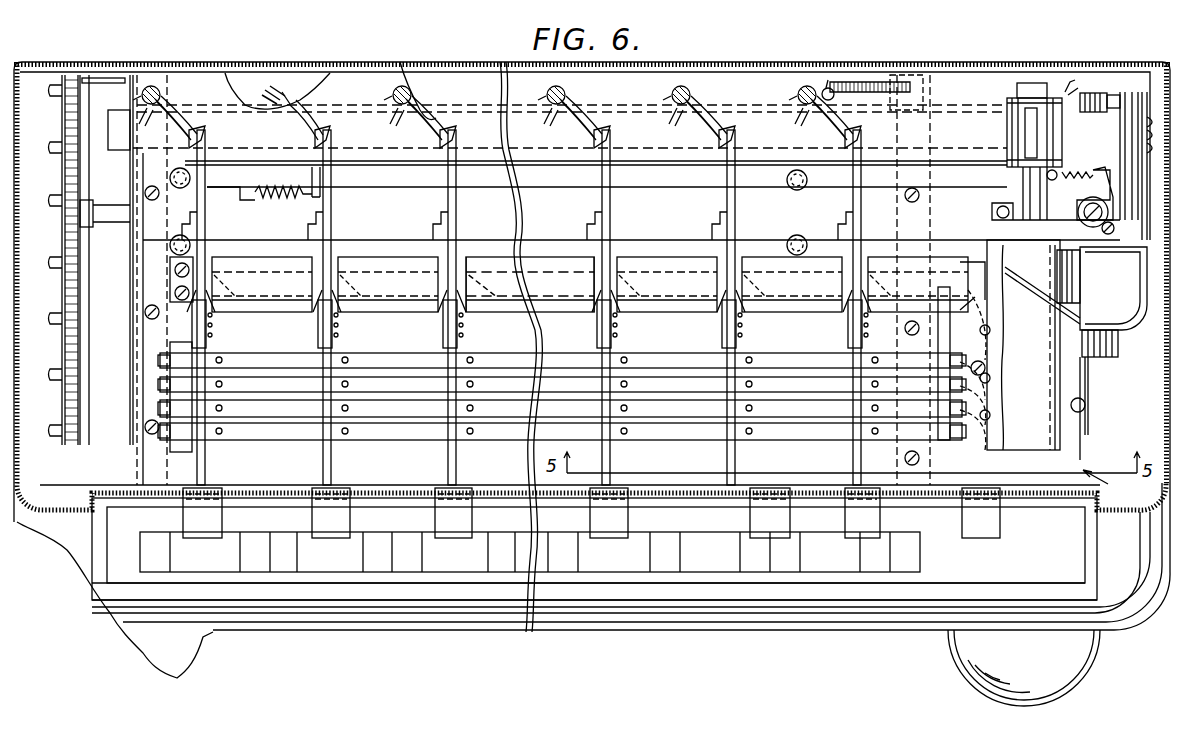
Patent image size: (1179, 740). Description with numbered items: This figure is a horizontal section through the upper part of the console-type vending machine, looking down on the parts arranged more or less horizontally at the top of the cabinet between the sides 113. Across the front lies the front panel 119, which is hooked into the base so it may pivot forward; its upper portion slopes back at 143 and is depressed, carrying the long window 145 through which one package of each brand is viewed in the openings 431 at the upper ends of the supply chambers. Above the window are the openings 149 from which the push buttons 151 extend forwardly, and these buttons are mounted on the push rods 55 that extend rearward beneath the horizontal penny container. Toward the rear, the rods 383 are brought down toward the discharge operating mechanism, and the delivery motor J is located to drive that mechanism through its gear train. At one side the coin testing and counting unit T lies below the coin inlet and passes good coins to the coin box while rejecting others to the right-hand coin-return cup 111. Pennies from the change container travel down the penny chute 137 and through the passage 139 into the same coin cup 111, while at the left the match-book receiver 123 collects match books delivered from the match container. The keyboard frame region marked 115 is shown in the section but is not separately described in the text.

The rods 383 is at (818, 96).
The keyboard frame 115 is at (358, 62).
The delivery motor J is at (1118, 90).
The sides 113 is at (1163, 370).
The penny chute 137 is at (1025, 290).
The passage 139 is at (1085, 403).
The push rods 55 is at (731, 466).
The coin testing and counting unit T is at (1102, 484).
The front panel 119 is at (1008, 612).
The openings 149 is at (770, 503).
The push buttons 151 is at (645, 518).
The openings 431 is at (893, 553).
The window 145 is at (752, 575).
The sloping upper portion of front panel 143 is at (820, 610).
The match-book receiver 123 is at (188, 658).
The coin-return cup 111 is at (1025, 690).